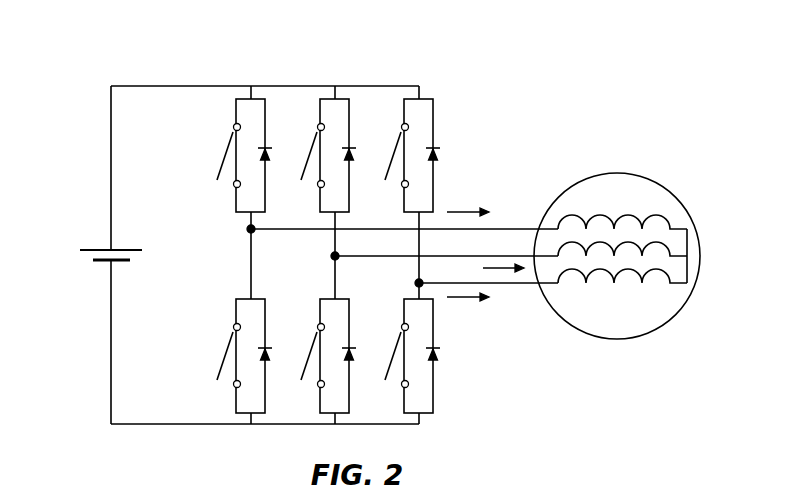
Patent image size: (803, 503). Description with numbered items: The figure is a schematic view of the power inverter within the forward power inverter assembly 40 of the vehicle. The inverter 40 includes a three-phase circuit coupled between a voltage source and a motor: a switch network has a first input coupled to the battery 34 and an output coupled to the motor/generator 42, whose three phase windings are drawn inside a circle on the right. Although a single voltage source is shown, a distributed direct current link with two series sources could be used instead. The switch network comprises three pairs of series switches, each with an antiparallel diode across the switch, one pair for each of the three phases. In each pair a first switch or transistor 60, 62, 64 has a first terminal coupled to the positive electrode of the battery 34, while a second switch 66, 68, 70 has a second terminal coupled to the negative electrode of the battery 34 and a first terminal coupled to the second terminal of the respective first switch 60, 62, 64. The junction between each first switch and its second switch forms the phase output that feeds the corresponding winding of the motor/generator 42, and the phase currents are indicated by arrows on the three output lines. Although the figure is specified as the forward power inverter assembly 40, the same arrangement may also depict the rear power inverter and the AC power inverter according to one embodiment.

The battery 34 is at (94, 236).
The forward power inverter assembly 40 is at (143, 86).
The motor/generator 42 is at (612, 172).
The first switch 60 is at (220, 148).
The first switch 62 is at (304, 148).
The first switch 64 is at (388, 148).
The second switch 66 is at (220, 348).
The second switch 68 is at (304, 348).
The second switch 70 is at (388, 348).